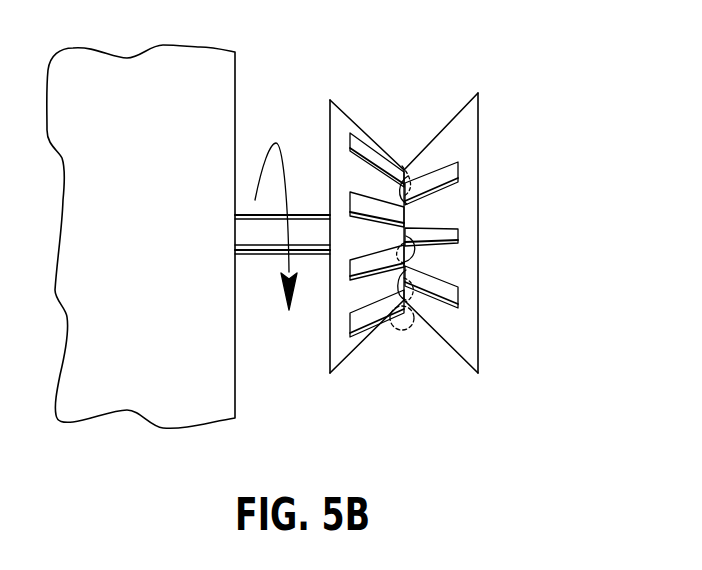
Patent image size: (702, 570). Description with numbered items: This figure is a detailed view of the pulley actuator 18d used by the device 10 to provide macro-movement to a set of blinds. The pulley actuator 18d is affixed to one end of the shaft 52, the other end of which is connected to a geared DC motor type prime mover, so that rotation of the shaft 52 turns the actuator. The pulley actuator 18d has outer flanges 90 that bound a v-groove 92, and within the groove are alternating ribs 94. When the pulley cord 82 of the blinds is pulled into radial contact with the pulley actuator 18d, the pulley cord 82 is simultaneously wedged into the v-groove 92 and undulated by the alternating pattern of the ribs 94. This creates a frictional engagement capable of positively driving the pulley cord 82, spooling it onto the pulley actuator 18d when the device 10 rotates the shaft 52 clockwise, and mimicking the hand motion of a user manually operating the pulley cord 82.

The device 10 is at (240, 75).
The shaft 52 is at (315, 212).
The pulley actuator 18d is at (482, 114).
The outer flanges 90 is at (478, 93).
The v-groove 92 is at (384, 150).
The alternating ribs 94 is at (458, 236).
The pulley cord 82 is at (410, 331).